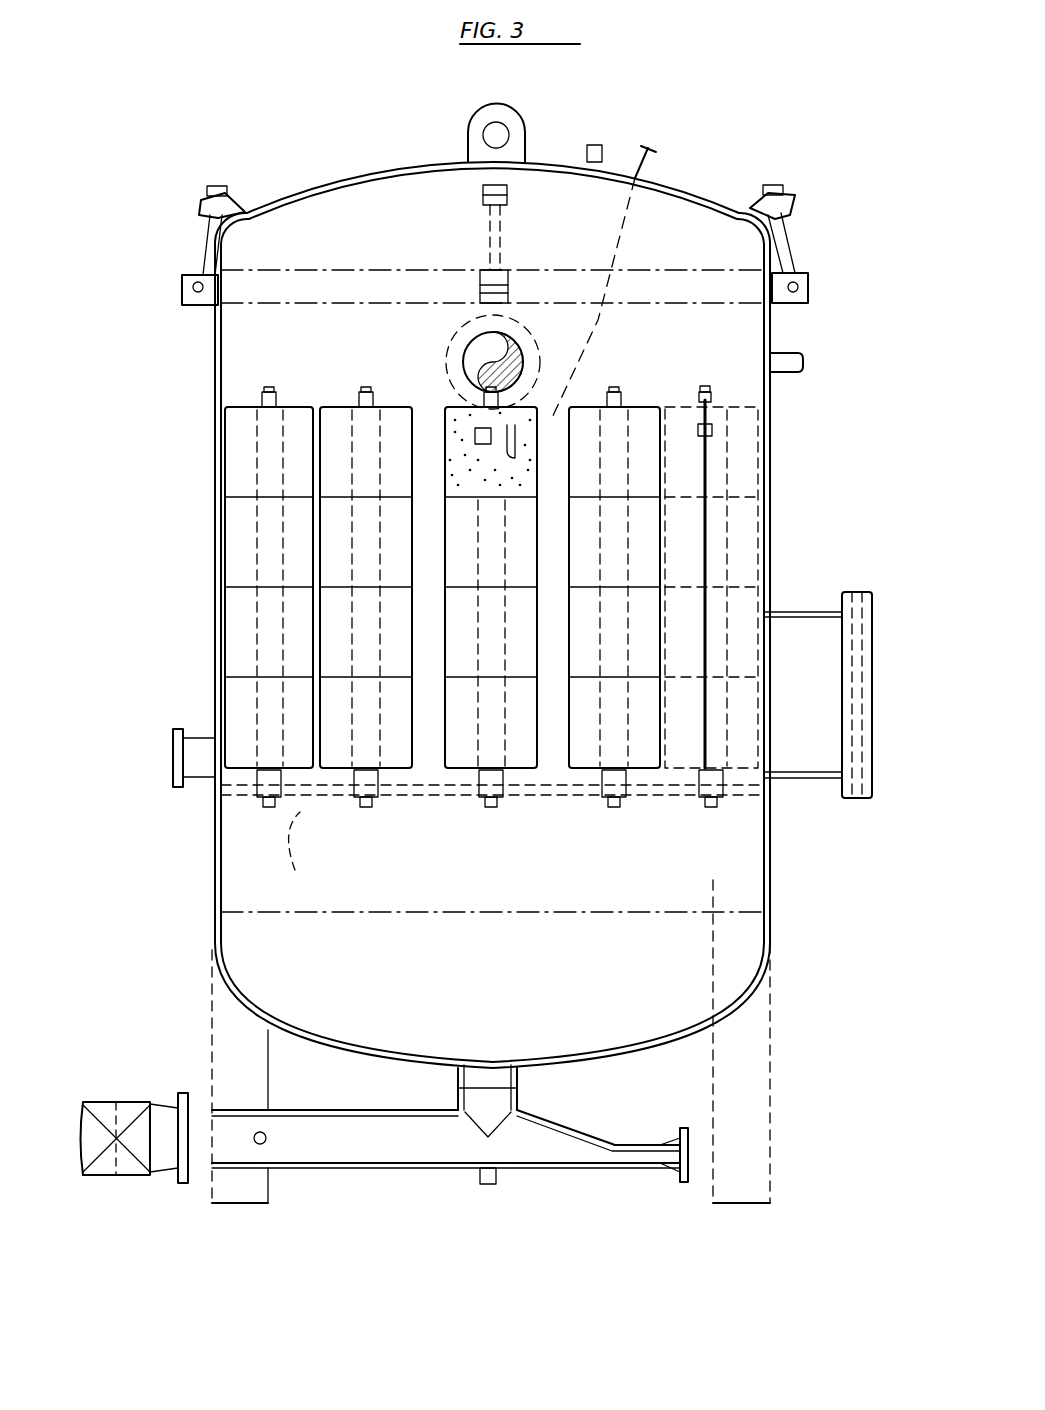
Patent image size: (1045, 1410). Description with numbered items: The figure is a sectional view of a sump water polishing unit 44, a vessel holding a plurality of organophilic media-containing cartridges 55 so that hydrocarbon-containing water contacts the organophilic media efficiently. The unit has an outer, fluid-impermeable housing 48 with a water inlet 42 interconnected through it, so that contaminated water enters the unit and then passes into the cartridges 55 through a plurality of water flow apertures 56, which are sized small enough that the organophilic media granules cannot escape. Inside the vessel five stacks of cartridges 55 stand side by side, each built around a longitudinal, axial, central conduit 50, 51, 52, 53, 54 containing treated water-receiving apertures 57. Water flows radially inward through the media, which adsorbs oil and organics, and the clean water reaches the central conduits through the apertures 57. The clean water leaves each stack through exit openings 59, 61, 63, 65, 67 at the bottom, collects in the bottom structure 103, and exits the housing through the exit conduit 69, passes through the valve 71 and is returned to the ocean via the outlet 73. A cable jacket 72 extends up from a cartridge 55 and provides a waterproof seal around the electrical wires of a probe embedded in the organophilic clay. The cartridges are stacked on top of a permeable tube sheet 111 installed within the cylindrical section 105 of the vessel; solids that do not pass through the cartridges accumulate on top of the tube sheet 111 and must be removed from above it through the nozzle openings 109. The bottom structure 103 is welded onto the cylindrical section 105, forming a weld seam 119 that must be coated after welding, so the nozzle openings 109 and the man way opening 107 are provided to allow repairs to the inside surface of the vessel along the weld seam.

The water inlet 42 is at (803, 360).
The sump water polishing unit 44 is at (203, 384).
The outer fluid-impermeable housing 48 is at (215, 320).
The central conduit 50 is at (727, 482).
The central conduit 51 is at (630, 510).
The central conduit 52 is at (505, 565).
The central conduit 53 is at (352, 658).
The central conduit 54 is at (257, 715).
The organophilic media-containing cartridge 55 is at (265, 468).
The water flow aperture 56 is at (470, 432).
The treated water-receiving aperture 57 is at (492, 425).
The exit opening 59 is at (716, 806).
The exit opening 61 is at (618, 806).
The exit opening 63 is at (493, 806).
The exit opening 65 is at (366, 806).
The exit opening 67 is at (270, 806).
The exit conduit 69 is at (517, 1075).
The valve 71 is at (120, 1140).
The cable jacket 72 is at (650, 170).
The outlet 73 is at (88, 1105).
The bottom structure 103 is at (275, 950).
The cylindrical section 105 is at (770, 888).
The man way opening 107 is at (800, 640).
The nozzle opening 109 is at (173, 778).
The tube sheet 111 is at (326, 844).
The weld seam 119 is at (764, 910).